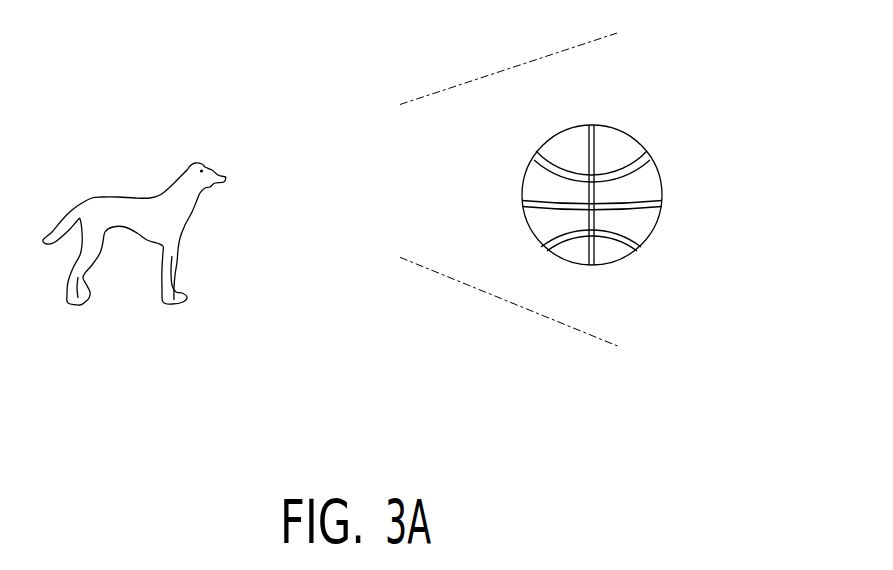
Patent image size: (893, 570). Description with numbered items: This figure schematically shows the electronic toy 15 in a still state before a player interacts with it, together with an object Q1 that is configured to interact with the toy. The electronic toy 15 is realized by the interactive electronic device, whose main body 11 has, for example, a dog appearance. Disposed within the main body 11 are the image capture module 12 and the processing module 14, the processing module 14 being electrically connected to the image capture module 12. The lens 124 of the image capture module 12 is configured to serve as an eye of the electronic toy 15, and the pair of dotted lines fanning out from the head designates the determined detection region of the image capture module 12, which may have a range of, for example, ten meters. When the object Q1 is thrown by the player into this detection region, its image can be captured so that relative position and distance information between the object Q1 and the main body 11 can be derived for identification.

The main body 11 is at (145, 212).
The image capture module 12 is at (387, 190).
The lens 124 is at (203, 160).
The processing module 14 is at (175, 263).
The electronic toy 15 is at (128, 330).
The object Q1 is at (662, 184).